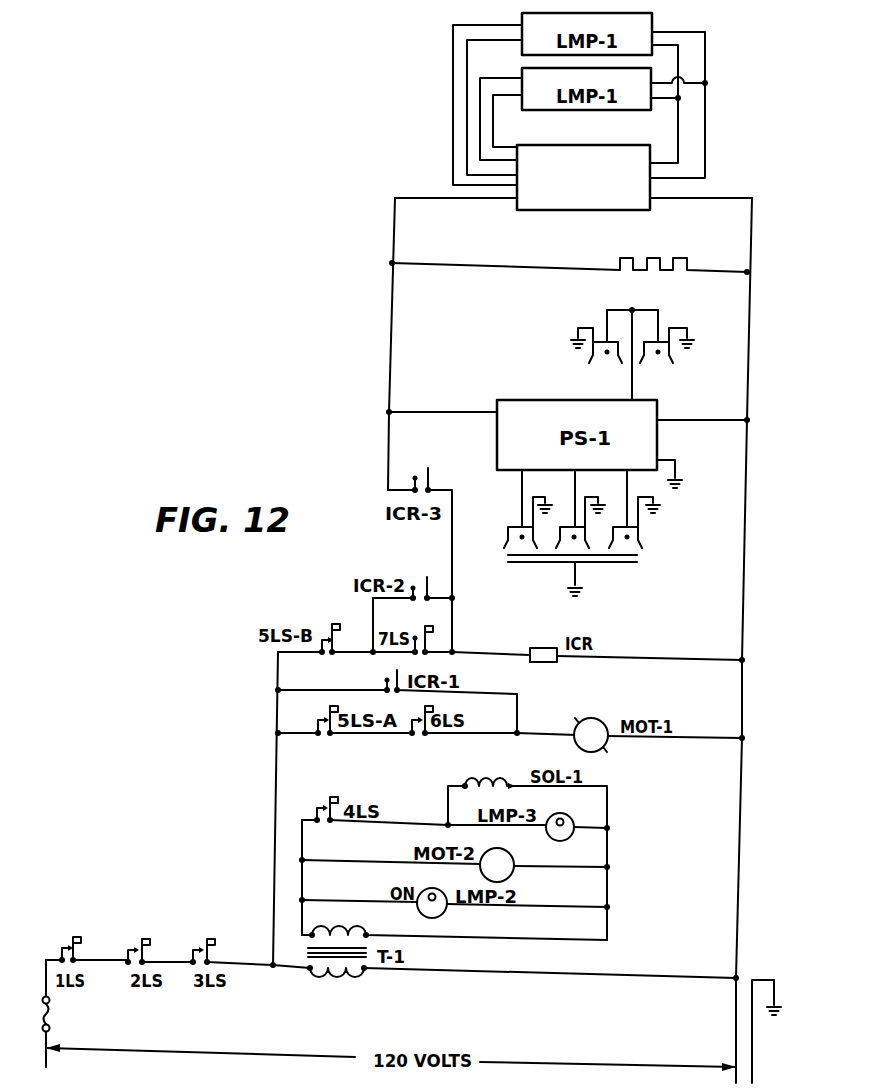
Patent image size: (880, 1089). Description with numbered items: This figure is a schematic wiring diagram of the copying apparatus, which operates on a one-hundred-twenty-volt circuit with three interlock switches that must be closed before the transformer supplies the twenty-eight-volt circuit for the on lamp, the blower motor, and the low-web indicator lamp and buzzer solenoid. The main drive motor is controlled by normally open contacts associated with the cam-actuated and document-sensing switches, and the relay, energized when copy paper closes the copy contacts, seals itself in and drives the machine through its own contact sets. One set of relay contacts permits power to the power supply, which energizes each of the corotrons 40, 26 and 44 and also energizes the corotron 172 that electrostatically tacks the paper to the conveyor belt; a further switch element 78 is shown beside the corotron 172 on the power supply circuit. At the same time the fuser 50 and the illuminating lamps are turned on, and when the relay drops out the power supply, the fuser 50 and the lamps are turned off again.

The fuser 50 is at (687, 258).
The corotron 172 is at (589, 362).
The switch 78 is at (672, 362).
The corotron 40 is at (508, 545).
The corotron 44 is at (641, 537).
The corotron 26 is at (557, 545).